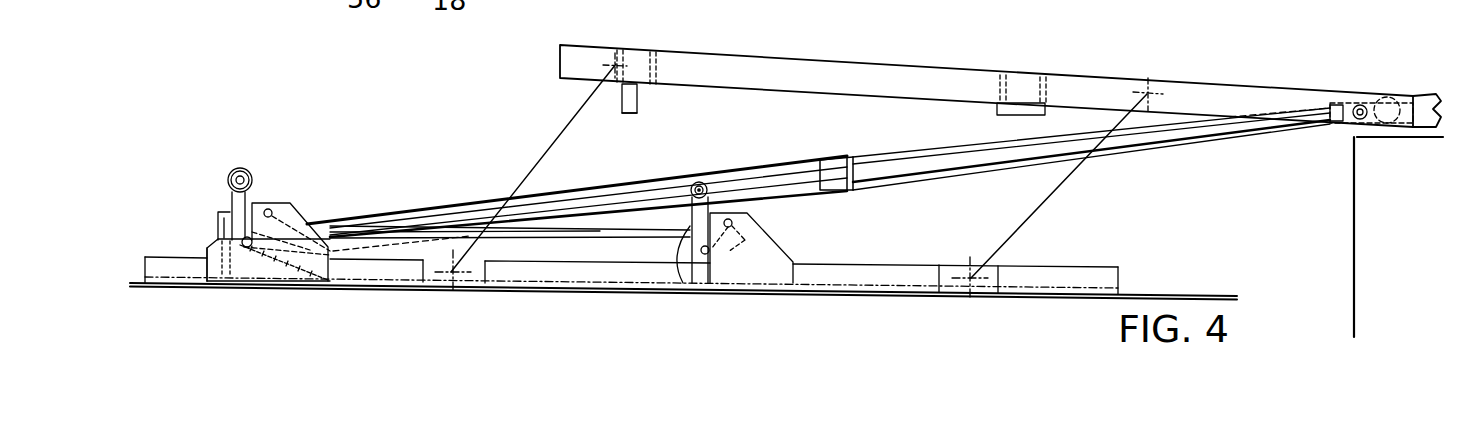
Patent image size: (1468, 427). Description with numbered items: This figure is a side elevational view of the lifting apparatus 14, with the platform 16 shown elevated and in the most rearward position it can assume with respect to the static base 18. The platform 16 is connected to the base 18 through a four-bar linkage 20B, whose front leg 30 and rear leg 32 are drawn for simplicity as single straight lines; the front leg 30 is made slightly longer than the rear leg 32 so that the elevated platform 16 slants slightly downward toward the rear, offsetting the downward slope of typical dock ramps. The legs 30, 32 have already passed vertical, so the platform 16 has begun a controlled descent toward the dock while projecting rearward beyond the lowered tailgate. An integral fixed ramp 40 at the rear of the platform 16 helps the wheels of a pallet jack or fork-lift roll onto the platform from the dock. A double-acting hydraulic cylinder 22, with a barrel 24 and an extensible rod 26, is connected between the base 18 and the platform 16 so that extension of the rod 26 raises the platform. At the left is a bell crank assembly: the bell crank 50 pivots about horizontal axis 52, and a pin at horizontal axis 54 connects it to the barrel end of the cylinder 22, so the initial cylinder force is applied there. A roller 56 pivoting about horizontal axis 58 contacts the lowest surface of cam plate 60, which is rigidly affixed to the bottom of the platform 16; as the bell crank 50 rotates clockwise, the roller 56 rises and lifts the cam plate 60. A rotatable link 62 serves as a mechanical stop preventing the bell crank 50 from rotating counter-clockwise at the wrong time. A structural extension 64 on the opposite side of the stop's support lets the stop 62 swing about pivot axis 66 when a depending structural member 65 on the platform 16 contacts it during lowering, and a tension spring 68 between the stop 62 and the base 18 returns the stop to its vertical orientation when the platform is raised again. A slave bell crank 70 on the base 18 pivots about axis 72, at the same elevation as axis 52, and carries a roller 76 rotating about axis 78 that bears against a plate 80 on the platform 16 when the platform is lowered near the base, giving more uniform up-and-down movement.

The apparatus 14 is at (528, 48).
The platform 16 is at (848, 63).
The base 18 is at (619, 270).
The four-bar linkage 20B is at (818, 171).
The hydraulic cylinder 22 is at (443, 206).
The barrel 24 is at (824, 160).
The extensible rod 26 is at (918, 173).
The front leg 30 is at (574, 127).
The rear leg 32 is at (1058, 187).
The ramp 40 is at (1424, 95).
The bell crank 50 is at (262, 203).
The horizontal axis 52 is at (274, 212).
The horizontal axis 54 is at (248, 247).
The roller 56 is at (242, 168).
The horizontal axis 58 is at (231, 172).
The cam plate 60 is at (650, 88).
The rotatable link 62 is at (227, 227).
The structural extension 64 is at (231, 200).
The depending structural member 65 is at (627, 116).
The pivot axis 66 is at (209, 249).
The tension spring 68 is at (303, 281).
The bell crank 70 is at (688, 288).
The axis 72 is at (733, 230).
The roller 76 is at (722, 170).
The axis 78 is at (703, 181).
The plate 80 is at (1005, 114).